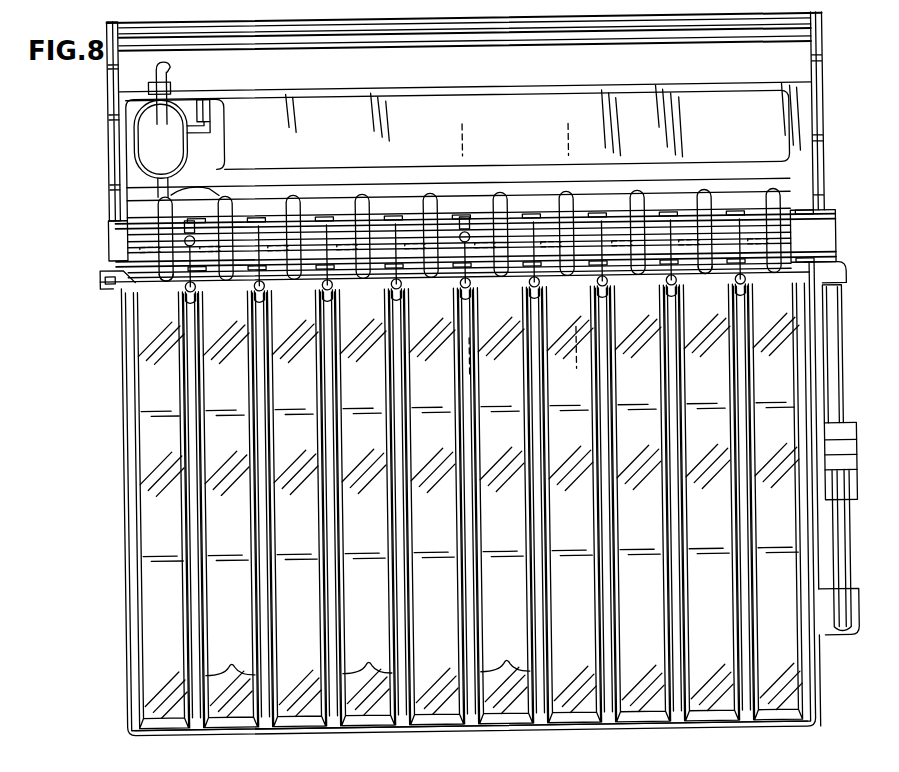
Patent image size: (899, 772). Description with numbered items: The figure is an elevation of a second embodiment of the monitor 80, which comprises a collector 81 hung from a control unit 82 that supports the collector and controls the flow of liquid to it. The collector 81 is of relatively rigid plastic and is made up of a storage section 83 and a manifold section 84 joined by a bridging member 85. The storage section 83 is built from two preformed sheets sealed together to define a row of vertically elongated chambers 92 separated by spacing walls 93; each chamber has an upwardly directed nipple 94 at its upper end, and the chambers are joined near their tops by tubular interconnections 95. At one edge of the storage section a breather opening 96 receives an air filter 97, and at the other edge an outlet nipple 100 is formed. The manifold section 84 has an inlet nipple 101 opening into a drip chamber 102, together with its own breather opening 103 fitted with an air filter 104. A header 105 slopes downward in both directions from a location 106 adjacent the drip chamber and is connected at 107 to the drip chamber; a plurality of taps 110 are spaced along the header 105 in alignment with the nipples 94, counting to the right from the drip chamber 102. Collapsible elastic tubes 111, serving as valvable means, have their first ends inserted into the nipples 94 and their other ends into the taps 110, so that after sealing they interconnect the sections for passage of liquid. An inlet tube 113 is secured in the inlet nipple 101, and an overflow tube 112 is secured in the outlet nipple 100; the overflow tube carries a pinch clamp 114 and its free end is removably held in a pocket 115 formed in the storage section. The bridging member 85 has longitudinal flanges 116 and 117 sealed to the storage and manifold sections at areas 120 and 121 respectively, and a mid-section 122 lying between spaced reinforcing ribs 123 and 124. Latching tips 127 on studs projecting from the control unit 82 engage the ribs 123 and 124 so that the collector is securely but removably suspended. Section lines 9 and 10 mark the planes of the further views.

The monitor 80 is at (96, 124).
The collector 81 is at (146, 338).
The control unit 82 is at (812, 124).
The storage section 83 is at (128, 548).
The manifold section 84 is at (792, 176).
The bridging member 85 is at (117, 237).
The vertically elongated chambers 92 is at (150, 586).
The spacing walls 93 is at (367, 654).
The upwardly directed nipples 94 is at (168, 281).
The tubular interconnections 95 is at (404, 286).
The breather opening 96 is at (100, 277).
The air filter 97 is at (110, 285).
The outlet nipple 100 is at (849, 284).
The inlet nipple 101 is at (177, 86).
The drip chamber 102 is at (178, 148).
The breather opening 103 is at (216, 120).
The air filter 104 is at (218, 102).
The header 105 is at (622, 190).
The location adjacent drip chamber 106 is at (196, 183).
The connection to drip chamber 107 is at (161, 187).
The taps 110 is at (223, 209).
The collapsible elastic tubes 111 is at (352, 241).
The overflow tube 112 is at (844, 341).
The inlet tube 113 is at (160, 64).
The pinch clamp 114 is at (852, 458).
The pocket 115 is at (858, 627).
The longitudinal flange 116 is at (418, 212).
The longitudinal flange 117 is at (628, 266).
The sealing area 120 is at (397, 212).
The sealing area 121 is at (547, 265).
The mid-section 122 is at (806, 241).
The reinforcing rib 123 is at (806, 224).
The reinforcing rib 124 is at (800, 258).
The latching tips 127 is at (204, 226).
The section line 9 is at (460, 131).
The section line 10 is at (565, 131).